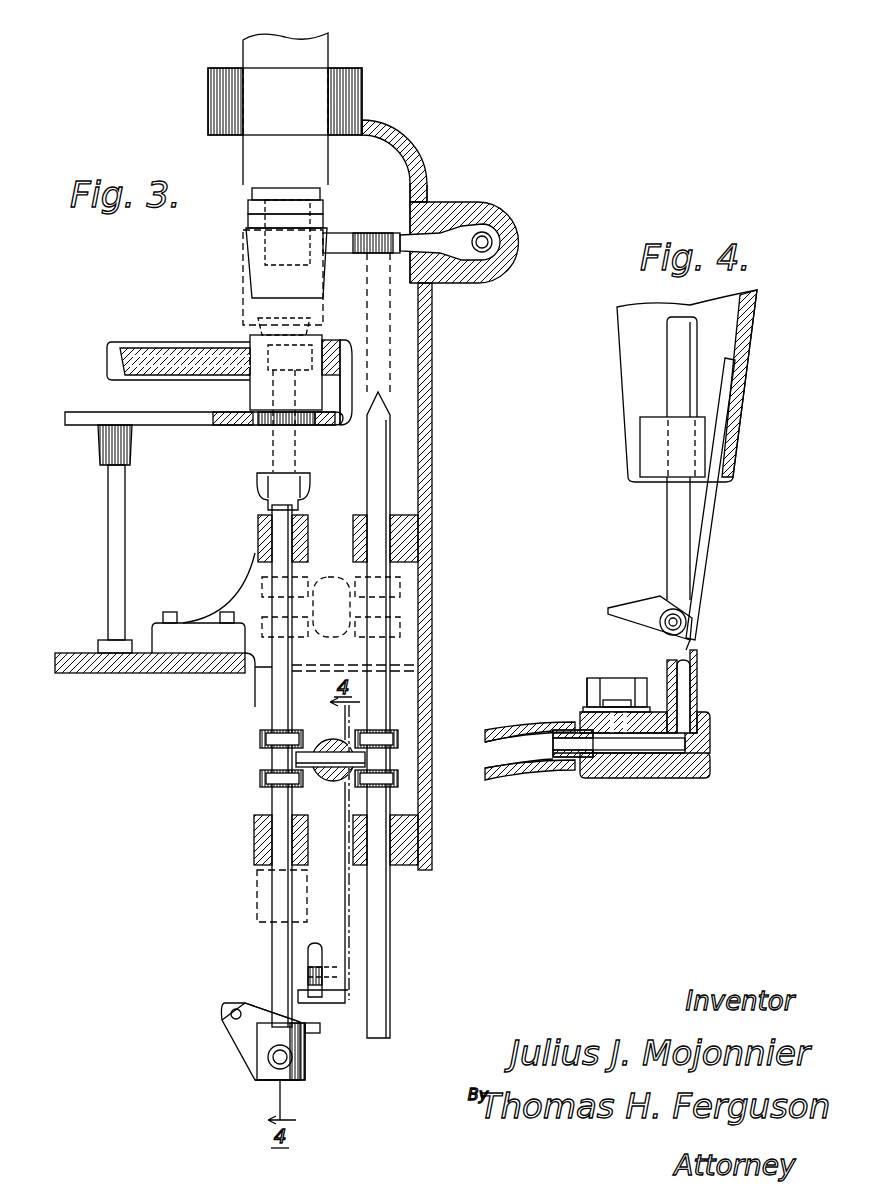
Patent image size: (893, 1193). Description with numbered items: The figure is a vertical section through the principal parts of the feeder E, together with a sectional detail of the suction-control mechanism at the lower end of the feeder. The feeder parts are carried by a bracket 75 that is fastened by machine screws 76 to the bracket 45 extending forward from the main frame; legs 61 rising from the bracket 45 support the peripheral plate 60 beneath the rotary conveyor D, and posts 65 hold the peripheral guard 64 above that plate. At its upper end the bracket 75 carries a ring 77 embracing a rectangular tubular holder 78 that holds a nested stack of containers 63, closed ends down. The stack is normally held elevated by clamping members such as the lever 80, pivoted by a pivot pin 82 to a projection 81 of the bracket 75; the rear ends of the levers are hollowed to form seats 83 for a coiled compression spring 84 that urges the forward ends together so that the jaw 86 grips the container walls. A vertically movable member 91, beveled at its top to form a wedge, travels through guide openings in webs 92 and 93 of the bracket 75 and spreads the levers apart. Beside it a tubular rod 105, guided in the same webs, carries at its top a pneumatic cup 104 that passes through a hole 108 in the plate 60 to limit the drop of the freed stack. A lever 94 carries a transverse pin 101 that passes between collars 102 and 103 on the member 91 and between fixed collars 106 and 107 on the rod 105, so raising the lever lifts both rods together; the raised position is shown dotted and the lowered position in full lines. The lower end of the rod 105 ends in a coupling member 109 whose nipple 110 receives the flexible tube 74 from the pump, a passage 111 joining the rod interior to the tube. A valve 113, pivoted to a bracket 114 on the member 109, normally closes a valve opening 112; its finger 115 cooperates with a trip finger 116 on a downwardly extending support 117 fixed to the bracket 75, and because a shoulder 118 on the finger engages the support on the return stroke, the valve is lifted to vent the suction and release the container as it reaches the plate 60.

In FIG. 3, the tubular holder 78 is at (243, 43).
In FIG. 3, the ring 77 is at (222, 136).
In FIG. 3, the feeder E is at (440, 160).
In FIG. 3, the pivot pin 82 is at (430, 218).
In FIG. 3, the projection 81 is at (492, 210).
In FIG. 3, the hollow seat 83 is at (500, 236).
In FIG. 3, the coiled compression spring 84 is at (493, 244).
In FIG. 3, the clamping member 80 is at (346, 240).
In FIG. 3, the bracket 75 is at (433, 512).
In FIG. 4, the bracket 75 is at (748, 380).
In FIG. 3, the clamping jaw 86 is at (312, 201).
In FIG. 3, the post 65 is at (248, 226).
In FIG. 3, the container 63 is at (262, 338).
In FIG. 3, the peripheral guard 64 is at (331, 342).
In FIG. 3, the rotary conveyor D is at (158, 345).
In FIG. 3, the peripheral plate 60 is at (200, 426).
In FIG. 3, the hole 108 is at (272, 428).
In FIG. 3, the leg 61 is at (126, 548).
In FIG. 3, the bracket 45 is at (58, 673).
In FIG. 3, the machine screw 76 is at (176, 614).
In FIG. 3, the pneumatic cup 104 is at (262, 488).
In FIG. 3, the web 92 is at (357, 517).
In FIG. 3, the web 93 is at (433, 858).
In FIG. 3, the vertically movable member 91 is at (392, 432).
In FIG. 3, the tubular rod 105 is at (272, 708).
In FIG. 4, the tubular rod 105 is at (698, 692).
In FIG. 3, the lever 94 is at (332, 576).
In FIG. 3, the fixed collar 106 is at (262, 742).
In FIG. 3, the fixed collar 107 is at (262, 782).
In FIG. 3, the collar 102 is at (400, 742).
In FIG. 3, the collar 103 is at (400, 780).
In FIG. 3, the transverse pin 101 is at (360, 760).
In FIG. 3, the support 117 is at (312, 938).
In FIG. 4, the support 117 is at (706, 588).
In FIG. 3, the trip finger 116 is at (306, 972).
In FIG. 4, the trip finger 116 is at (608, 611).
In FIG. 3, the shoulder 118 is at (332, 1002).
In FIG. 4, the shoulder 118 is at (692, 640).
In FIG. 3, the coupling member 109 is at (307, 1072).
In FIG. 4, the coupling member 109 is at (711, 770).
In FIG. 3, the nipple 110 is at (277, 1070).
In FIG. 4, the nipple 110 is at (576, 760).
In FIG. 3, the bracket 114 is at (226, 1021).
In FIG. 4, the bracket 114 is at (590, 682).
In FIG. 3, the valve 113 is at (262, 1022).
In FIG. 4, the valve 113 is at (607, 678).
In FIG. 3, the valve opening 112 is at (258, 1042).
In FIG. 4, the valve opening 112 is at (620, 735).
In FIG. 3, the communicating passage 111 is at (272, 1062).
In FIG. 4, the communicating passage 111 is at (645, 750).
In FIG. 3, the finger 115 is at (320, 1031).
In FIG. 4, the finger 115 is at (618, 705).
In FIG. 4, the flexible tube 74 is at (528, 723).